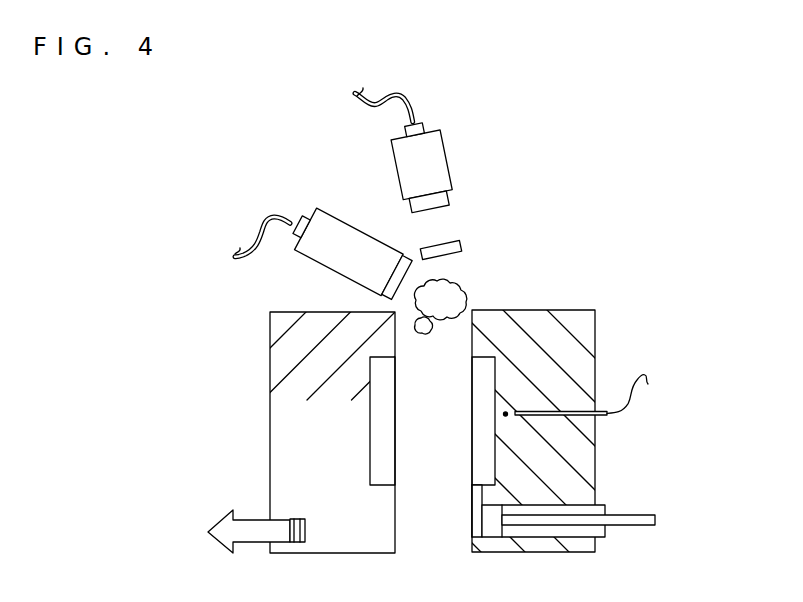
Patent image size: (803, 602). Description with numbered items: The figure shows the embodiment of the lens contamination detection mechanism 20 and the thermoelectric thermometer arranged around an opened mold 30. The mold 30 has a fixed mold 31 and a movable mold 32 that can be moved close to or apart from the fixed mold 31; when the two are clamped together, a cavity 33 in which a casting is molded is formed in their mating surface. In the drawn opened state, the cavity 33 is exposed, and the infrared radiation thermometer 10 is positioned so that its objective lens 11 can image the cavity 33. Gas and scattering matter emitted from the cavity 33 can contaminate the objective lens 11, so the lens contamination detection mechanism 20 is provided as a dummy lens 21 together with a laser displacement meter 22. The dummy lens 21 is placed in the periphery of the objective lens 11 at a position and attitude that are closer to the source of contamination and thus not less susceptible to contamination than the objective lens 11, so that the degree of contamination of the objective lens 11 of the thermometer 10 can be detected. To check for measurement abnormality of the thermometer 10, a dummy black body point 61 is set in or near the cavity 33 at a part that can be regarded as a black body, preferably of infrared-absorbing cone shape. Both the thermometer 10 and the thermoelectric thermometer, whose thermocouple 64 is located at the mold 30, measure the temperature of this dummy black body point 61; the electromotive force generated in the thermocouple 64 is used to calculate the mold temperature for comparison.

The thermometer 10 is at (322, 258).
The objective lens 11 is at (393, 297).
The lens contamination detection mechanism 20 is at (448, 174).
The dummy lens 21 is at (463, 240).
The laser displacement meter 22 is at (450, 153).
The mold 30 is at (500, 300).
The fixed mold 31 is at (597, 350).
The movable mold 32 is at (270, 427).
The cavity 33 is at (495, 460).
The dummy black body point 61 is at (500, 413).
The thermocouple 64 is at (600, 420).